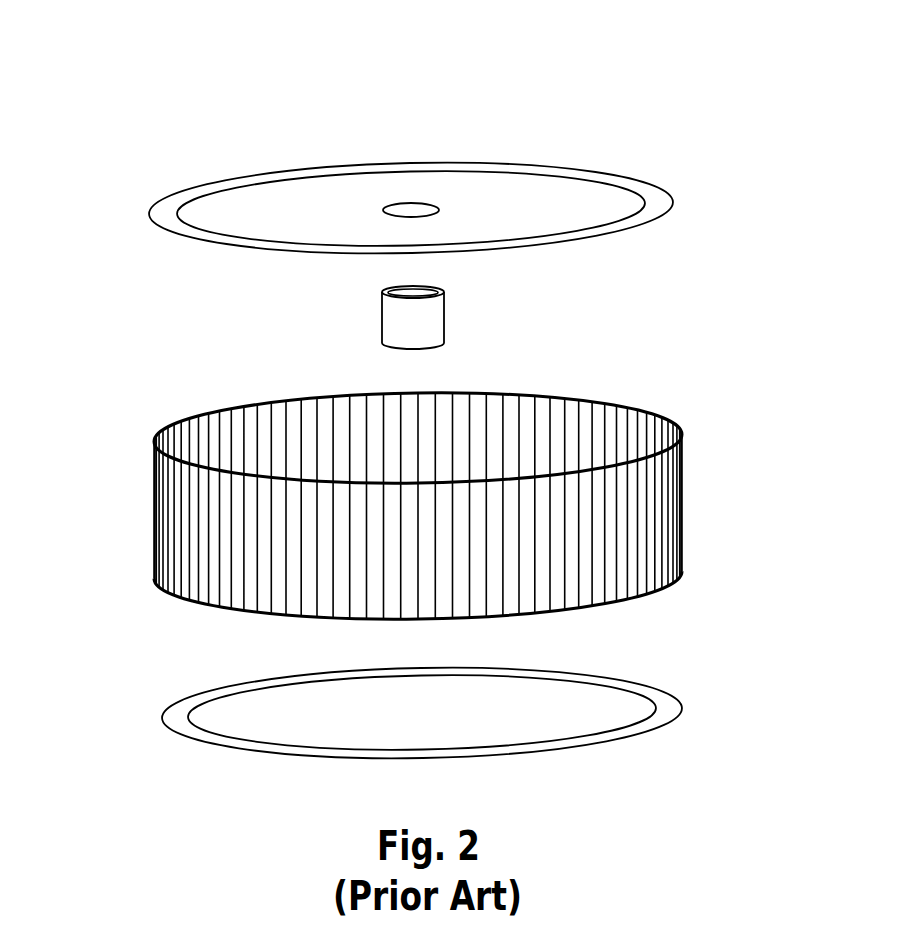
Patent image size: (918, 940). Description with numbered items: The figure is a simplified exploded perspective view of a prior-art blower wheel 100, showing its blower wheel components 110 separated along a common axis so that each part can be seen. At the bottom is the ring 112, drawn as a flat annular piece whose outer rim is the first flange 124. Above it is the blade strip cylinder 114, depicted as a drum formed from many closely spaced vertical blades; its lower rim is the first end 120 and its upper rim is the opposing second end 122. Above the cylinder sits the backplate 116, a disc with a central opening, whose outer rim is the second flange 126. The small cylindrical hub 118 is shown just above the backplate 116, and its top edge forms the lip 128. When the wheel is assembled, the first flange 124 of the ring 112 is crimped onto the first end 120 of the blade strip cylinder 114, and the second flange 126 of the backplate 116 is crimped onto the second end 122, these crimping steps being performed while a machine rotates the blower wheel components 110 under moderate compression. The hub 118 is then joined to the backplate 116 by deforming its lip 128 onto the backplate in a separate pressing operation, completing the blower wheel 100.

The blower wheel 100 is at (523, 38).
The blower wheel components 110 is at (137, 85).
The ring 112 is at (670, 705).
The blade strip cylinder 114 is at (683, 476).
The backplate 116 is at (525, 192).
The hub 118 is at (445, 330).
The first end 120 is at (138, 595).
The second end 122 is at (138, 413).
The first flange 124 is at (625, 738).
The second flange 126 is at (673, 205).
The lip 128 is at (382, 291).